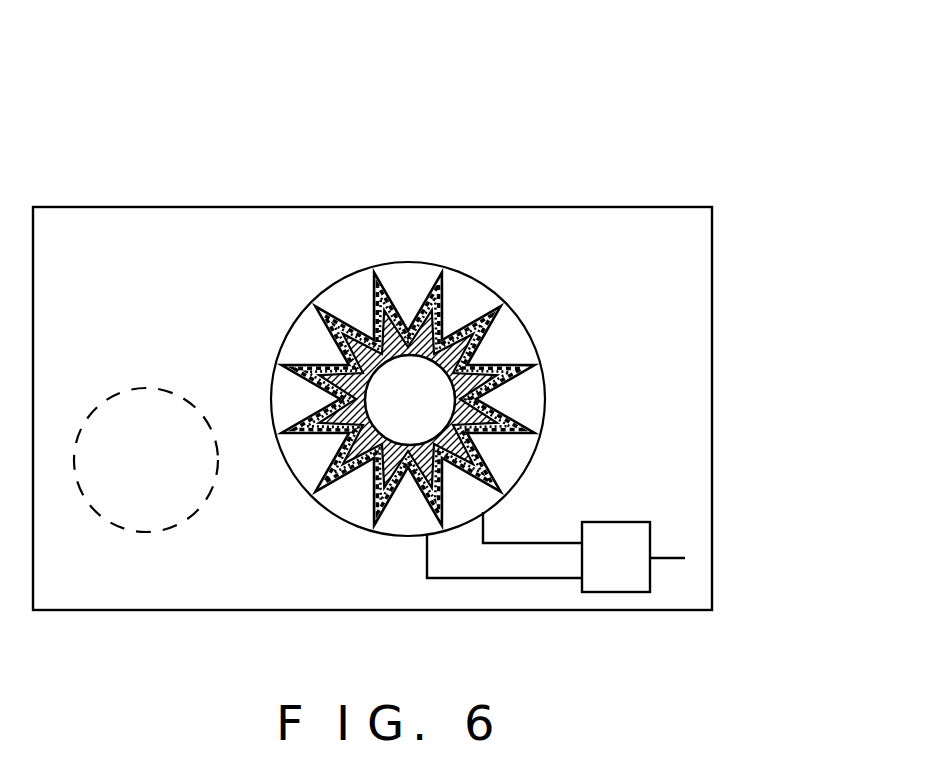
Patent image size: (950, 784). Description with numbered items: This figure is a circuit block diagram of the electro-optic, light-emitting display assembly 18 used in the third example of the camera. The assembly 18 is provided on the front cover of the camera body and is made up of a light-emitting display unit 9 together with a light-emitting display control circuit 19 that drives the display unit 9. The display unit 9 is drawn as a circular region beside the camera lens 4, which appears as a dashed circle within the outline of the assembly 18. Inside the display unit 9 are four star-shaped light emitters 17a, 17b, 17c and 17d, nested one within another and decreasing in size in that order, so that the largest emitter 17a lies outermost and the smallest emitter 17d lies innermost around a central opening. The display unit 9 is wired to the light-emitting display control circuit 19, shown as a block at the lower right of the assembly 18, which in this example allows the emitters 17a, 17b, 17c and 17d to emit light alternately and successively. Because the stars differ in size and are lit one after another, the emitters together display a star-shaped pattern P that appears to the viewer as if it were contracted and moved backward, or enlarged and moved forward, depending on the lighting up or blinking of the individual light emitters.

The displayed pattern P is at (291, 323).
The lens 4 is at (162, 404).
The light-emitting display unit 9 is at (342, 290).
The light emitter 17a is at (392, 310).
The light emitter 17b is at (477, 328).
The light emitter 17c is at (508, 353).
The light emitter 17d is at (508, 405).
The electro-optic, light-emitting display assembly 18 is at (712, 447).
The light-emitting display control circuit 19 is at (609, 537).